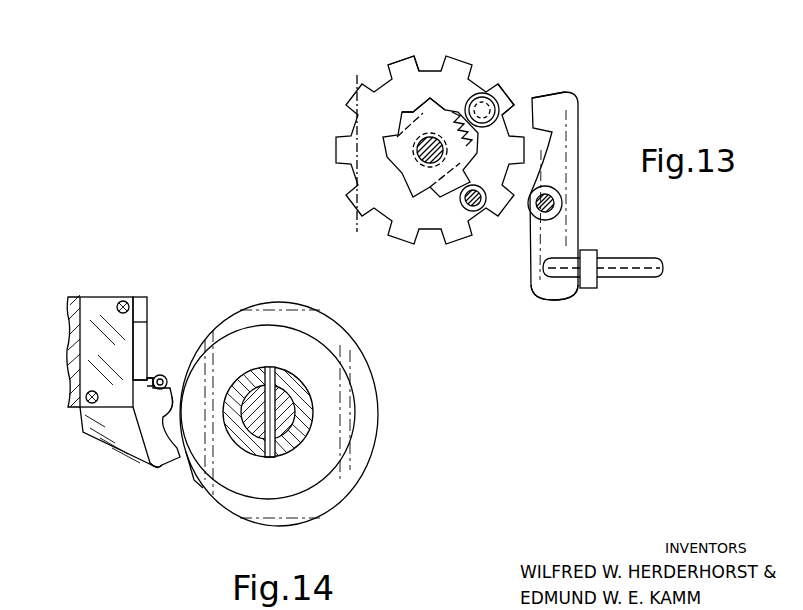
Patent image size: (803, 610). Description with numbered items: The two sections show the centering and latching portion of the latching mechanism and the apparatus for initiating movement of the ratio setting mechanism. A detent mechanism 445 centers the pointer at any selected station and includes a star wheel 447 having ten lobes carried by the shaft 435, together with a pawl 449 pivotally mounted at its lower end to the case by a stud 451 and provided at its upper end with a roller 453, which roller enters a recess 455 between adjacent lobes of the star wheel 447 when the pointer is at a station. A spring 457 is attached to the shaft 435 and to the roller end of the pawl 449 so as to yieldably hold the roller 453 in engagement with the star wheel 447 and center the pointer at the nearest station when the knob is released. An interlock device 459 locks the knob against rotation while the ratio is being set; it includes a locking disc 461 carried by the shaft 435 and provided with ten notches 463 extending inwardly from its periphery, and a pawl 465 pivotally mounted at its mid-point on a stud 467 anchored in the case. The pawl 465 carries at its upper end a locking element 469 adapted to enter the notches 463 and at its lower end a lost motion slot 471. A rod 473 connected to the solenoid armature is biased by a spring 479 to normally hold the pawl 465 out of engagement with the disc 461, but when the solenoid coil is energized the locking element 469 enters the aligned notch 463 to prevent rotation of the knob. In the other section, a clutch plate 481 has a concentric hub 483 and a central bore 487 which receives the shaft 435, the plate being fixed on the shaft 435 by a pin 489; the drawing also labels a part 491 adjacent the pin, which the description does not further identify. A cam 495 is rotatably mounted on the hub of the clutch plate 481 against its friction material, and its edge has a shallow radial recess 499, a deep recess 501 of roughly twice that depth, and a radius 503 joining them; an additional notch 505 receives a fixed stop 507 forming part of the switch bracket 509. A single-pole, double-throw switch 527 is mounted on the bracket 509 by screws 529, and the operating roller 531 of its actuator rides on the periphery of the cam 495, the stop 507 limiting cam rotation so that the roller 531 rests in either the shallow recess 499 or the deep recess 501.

In FIG. 13, the shaft 435 is at (420, 148).
In FIG. 14, the shaft 435 is at (287, 398).
In FIG. 13, the detent mechanism 445 is at (400, 160).
In FIG. 13, the star wheel 447 is at (423, 123).
In FIG. 13, the pawl 449 is at (500, 104).
In FIG. 13, the stud 451 is at (478, 212).
In FIG. 13, the roller 453 is at (490, 90).
In FIG. 13, the recess 455 is at (456, 108).
In FIG. 13, the spring 457 is at (450, 100).
In FIG. 13, the interlock device 459 is at (599, 203).
In FIG. 13, the locking disc 461 is at (352, 86).
In FIG. 13, the notches 463 is at (380, 80).
In FIG. 13, the pawl 465 is at (580, 113).
In FIG. 13, the stud 467 is at (560, 203).
In FIG. 13, the locking element 469 is at (548, 112).
In FIG. 13, the lost motion slot 471 is at (545, 290).
In FIG. 13, the rod 473 is at (569, 283).
In FIG. 14, the spring 479 is at (331, 398).
In FIG. 14, the clutch plate 481 is at (338, 468).
In FIG. 14, the hub 483 is at (303, 408).
In FIG. 14, the central bore 487 is at (285, 420).
In FIG. 14, the pin 489 is at (268, 367).
In FIG. 14, the key 491 is at (270, 457).
In FIG. 14, the cam 495 is at (380, 372).
In FIG. 14, the shallow radial recess 499 is at (165, 392).
In FIG. 14, the deep recess 501 is at (185, 425).
In FIG. 14, the radius 503 is at (168, 393).
In FIG. 14, the notch 505 is at (196, 488).
In FIG. 14, the fixed stop 507 is at (166, 472).
In FIG. 14, the switch bracket 509 is at (73, 295).
In FIG. 14, the single-pole, double-throw switch 527 is at (100, 300).
In FIG. 14, the screws 529 is at (125, 306).
In FIG. 14, the operating roller 531 is at (160, 375).